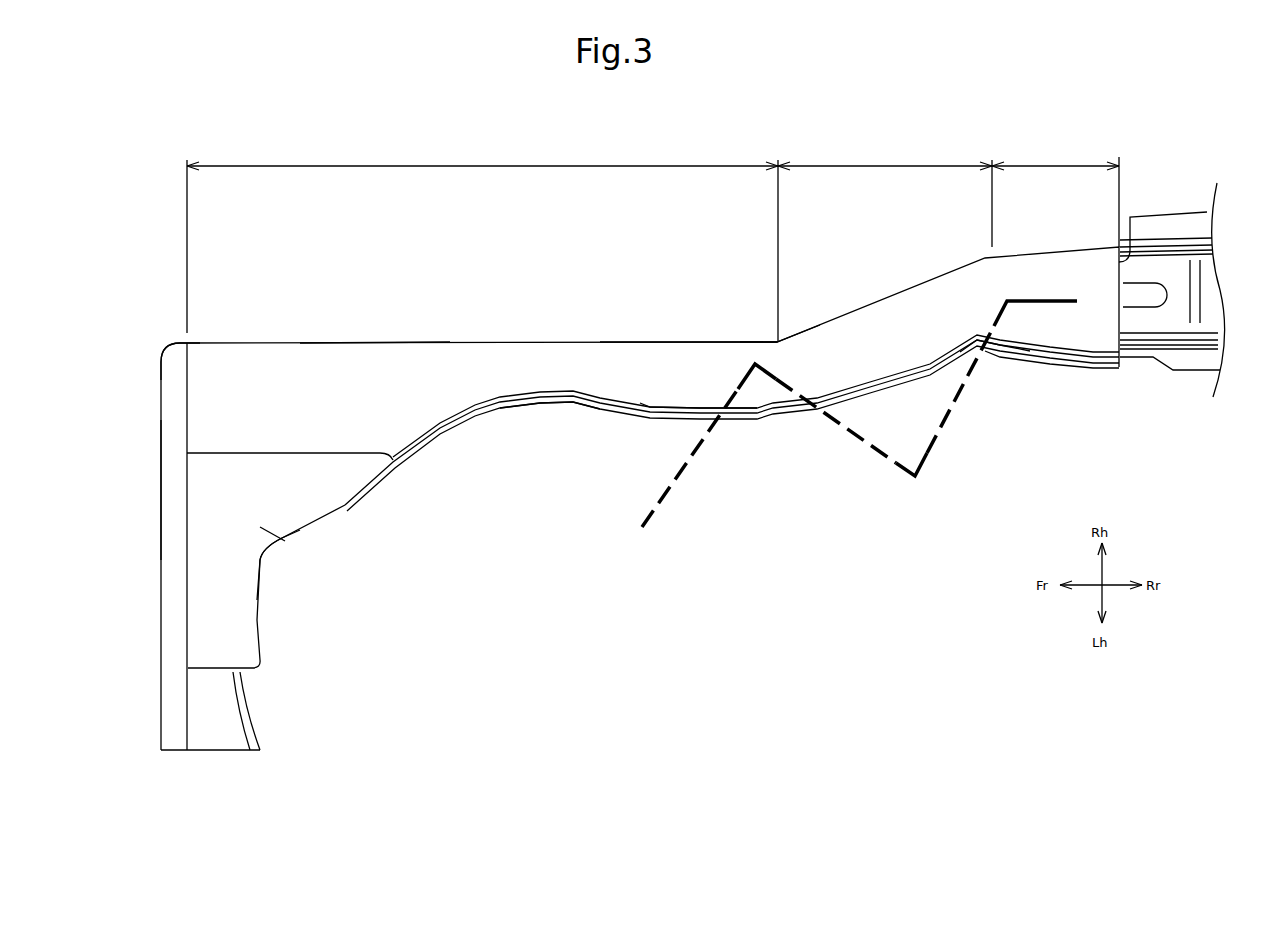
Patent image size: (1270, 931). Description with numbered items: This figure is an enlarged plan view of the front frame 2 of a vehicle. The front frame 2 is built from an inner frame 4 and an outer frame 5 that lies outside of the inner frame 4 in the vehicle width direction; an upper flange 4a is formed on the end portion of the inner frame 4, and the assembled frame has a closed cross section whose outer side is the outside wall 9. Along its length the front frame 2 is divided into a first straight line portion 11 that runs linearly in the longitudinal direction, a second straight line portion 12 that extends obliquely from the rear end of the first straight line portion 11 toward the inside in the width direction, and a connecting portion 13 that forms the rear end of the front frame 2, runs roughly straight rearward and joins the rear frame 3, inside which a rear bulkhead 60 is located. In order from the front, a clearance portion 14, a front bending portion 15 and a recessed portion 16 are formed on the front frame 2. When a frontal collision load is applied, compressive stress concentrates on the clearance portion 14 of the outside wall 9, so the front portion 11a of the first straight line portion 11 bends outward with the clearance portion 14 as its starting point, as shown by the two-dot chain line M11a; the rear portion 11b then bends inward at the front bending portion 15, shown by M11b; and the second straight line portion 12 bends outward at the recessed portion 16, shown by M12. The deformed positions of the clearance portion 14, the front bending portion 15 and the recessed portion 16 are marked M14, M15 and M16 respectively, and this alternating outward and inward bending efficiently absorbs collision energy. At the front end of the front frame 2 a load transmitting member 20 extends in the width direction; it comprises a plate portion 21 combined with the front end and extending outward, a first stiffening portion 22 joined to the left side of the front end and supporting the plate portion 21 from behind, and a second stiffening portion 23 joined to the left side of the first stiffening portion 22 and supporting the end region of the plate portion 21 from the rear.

The front frame 2 is at (640, 498).
The inner frame 4 is at (290, 342).
The upper flange 4a is at (646, 400).
The outer frame 5 is at (732, 430).
The outside wall 9 is at (438, 438).
The first straight line portion 11 is at (482, 241).
The front portion 11a is at (372, 373).
The rear portion 11b is at (674, 373).
The second straight line portion 12 is at (885, 193).
The connecting portion 13 is at (1055, 193).
The clearance portion 14 is at (547, 418).
The front bending portion 15 is at (773, 338).
The recessed portion 16 is at (993, 358).
The load transmitting member 20 is at (159, 372).
The plate portion 21 is at (172, 481).
The first stiffening portion 22 is at (283, 540).
The second stiffening portion 23 is at (222, 712).
The rear frame 3 is at (1170, 225).
The rear bulkhead 60 is at (1165, 320).
The front portion after deformation M11a is at (660, 527).
The rear portion after deformation M11b is at (870, 448).
The second straight line portion after deformation M12 is at (934, 453).
The clearance portion after deformation M14 is at (758, 372).
The front bending portion after deformation M15 is at (916, 482).
The recessed portion after deformation M16 is at (1010, 308).